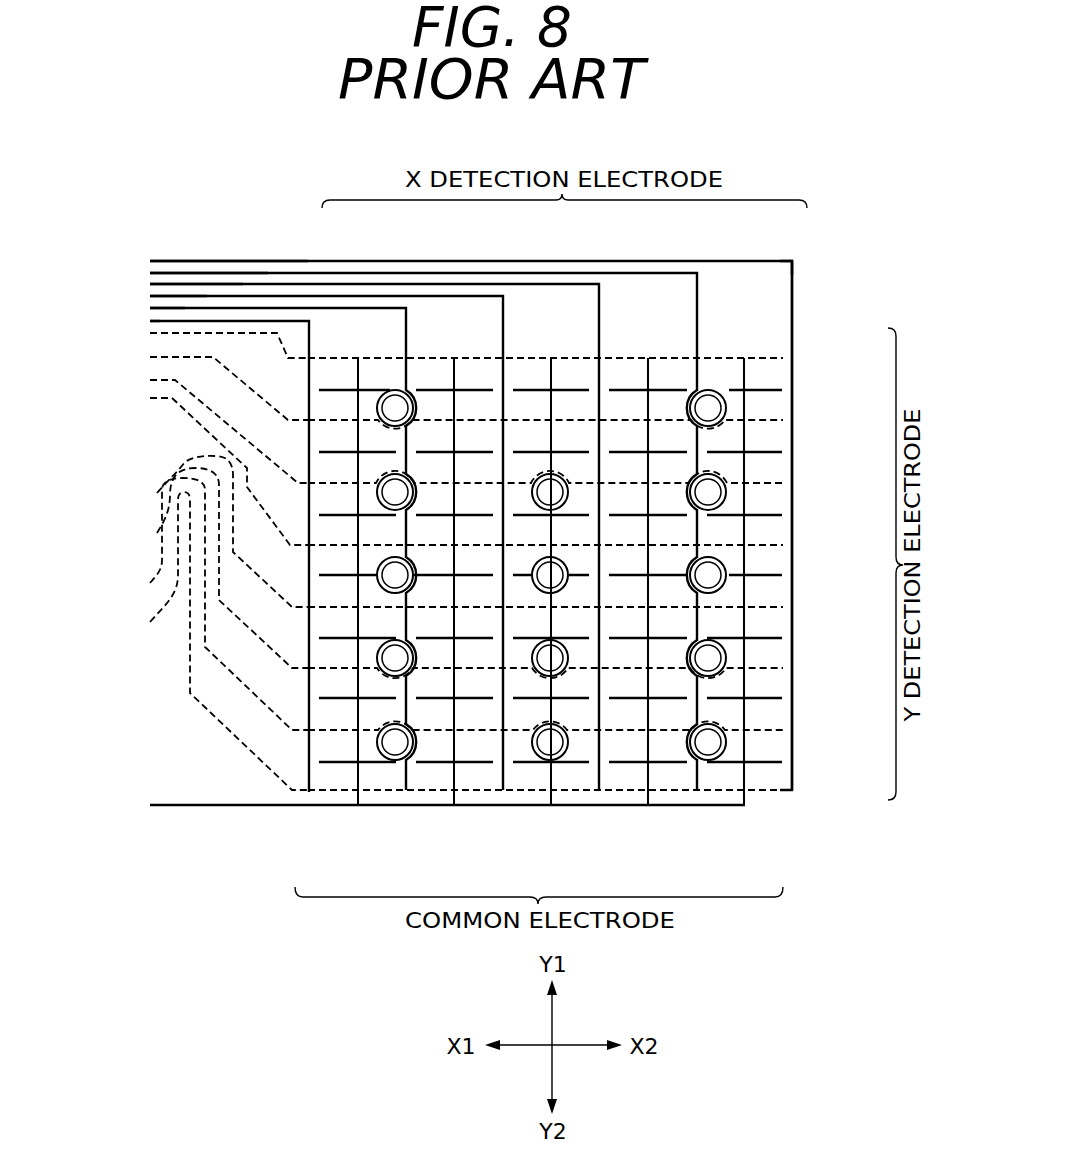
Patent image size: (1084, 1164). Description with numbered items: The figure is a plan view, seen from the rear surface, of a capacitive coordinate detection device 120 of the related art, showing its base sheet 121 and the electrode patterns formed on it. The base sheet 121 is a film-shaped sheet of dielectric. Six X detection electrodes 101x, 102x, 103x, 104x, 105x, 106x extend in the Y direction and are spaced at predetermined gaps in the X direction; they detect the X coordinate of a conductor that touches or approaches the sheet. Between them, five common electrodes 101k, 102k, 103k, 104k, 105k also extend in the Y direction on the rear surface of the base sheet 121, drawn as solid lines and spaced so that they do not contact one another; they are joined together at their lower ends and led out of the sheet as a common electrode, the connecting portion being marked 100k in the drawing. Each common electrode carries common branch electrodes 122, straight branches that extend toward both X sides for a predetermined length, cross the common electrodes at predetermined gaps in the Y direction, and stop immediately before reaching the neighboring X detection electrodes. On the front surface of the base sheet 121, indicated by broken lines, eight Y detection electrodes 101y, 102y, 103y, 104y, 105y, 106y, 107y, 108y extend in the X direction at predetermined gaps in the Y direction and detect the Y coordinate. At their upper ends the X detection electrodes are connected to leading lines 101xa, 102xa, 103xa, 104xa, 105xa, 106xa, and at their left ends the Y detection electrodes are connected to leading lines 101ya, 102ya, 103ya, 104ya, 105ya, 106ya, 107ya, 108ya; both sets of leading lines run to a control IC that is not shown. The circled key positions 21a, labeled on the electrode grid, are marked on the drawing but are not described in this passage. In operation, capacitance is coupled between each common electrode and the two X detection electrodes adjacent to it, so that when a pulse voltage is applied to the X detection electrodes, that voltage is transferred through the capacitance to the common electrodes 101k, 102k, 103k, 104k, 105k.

The coordinate detection device 120 is at (827, 211).
The base sheet 121 is at (792, 312).
The common branch electrodes 122 is at (345, 517).
The key (operation key) 21a is at (383, 392).
The common electrode lead 100k is at (207, 807).
The common electrode 101k is at (352, 807).
The common electrode 102k is at (452, 807).
The common electrode 103k is at (547, 807).
The common electrode 104k is at (643, 807).
The common electrode 105k is at (740, 807).
The X detection electrode 101x is at (309, 330).
The X detection electrode 102x is at (407, 325).
The X detection electrode 103x is at (503, 315).
The X detection electrode 104x is at (599, 303).
The X detection electrode 105x is at (697, 303).
The X detection electrode 106x is at (792, 293).
The leading line 101xa is at (160, 321).
The leading line 102xa is at (185, 308).
The leading line 103xa is at (207, 296).
The leading line 104xa is at (243, 284).
The leading line 105xa is at (268, 273).
The leading line 106xa is at (308, 261).
The Y detection electrode 101y is at (783, 790).
The Y detection electrode 102y is at (783, 730).
The Y detection electrode 103y is at (783, 668).
The Y detection electrode 104y is at (783, 607).
The Y detection electrode 105y is at (783, 545).
The Y detection electrode 106y is at (783, 483).
The Y detection electrode 107y is at (783, 420).
The Y detection electrode 108y is at (783, 358).
The leading line 101ya is at (150, 622).
The leading line 102ya is at (150, 583).
The leading line 103ya is at (157, 534).
The leading line 104ya is at (157, 494).
The leading line 105ya is at (175, 400).
The leading line 106ya is at (157, 381).
The leading line 107ya is at (157, 358).
The leading line 108ya is at (157, 334).